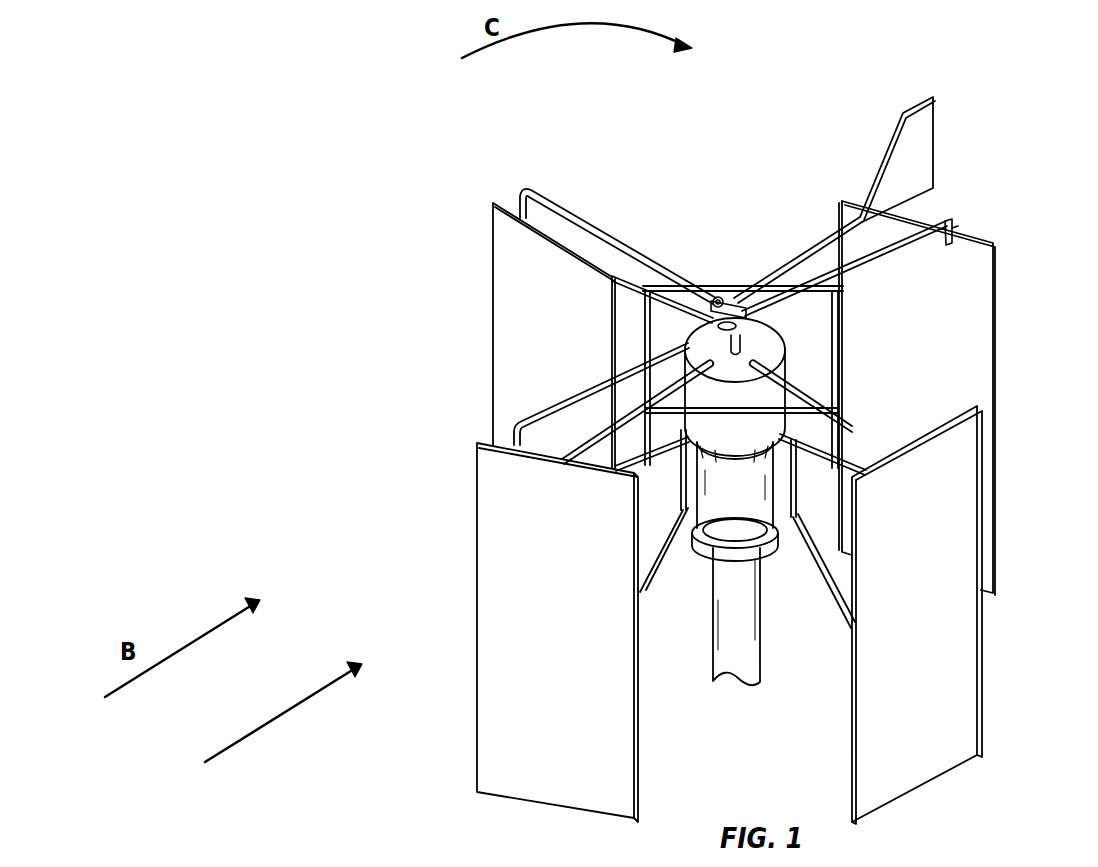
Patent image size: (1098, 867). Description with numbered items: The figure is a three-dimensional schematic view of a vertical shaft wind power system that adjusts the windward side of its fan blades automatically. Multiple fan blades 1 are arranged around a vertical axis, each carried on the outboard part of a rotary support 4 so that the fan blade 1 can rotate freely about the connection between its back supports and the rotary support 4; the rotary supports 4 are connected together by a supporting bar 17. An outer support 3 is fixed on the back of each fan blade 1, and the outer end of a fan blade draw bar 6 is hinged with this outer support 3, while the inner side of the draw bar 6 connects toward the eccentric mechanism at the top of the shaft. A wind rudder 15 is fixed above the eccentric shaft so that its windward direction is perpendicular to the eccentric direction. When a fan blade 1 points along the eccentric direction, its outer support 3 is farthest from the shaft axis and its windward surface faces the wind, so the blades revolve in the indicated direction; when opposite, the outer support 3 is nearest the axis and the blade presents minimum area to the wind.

The fan blade 1 is at (514, 348).
The outer support 3 is at (953, 228).
The rotary support 4 is at (856, 280).
The fan blade draw bar 6 is at (936, 233).
The wind rudder 15 is at (925, 128).
The supporting bar 17 is at (718, 300).